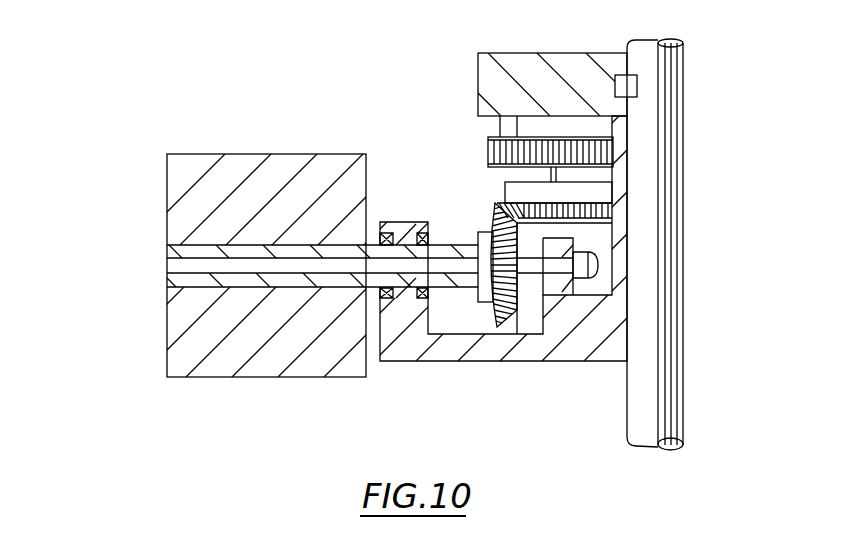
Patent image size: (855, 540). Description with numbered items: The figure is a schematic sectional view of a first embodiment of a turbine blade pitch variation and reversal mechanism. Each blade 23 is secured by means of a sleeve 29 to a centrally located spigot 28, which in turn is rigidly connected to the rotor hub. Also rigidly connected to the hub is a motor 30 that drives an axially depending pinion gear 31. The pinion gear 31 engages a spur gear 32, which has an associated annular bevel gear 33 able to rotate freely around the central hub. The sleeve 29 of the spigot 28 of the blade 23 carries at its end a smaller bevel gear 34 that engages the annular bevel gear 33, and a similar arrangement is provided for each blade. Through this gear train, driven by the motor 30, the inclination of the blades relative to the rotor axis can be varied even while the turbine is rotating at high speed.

The blade 23 is at (202, 370).
The spigot 28 is at (203, 268).
The sleeve 29 is at (180, 256).
The motor 30 is at (517, 52).
The pinion gear 31 is at (488, 155).
The spur gear 32 is at (587, 137).
The annular bevel gear 33 is at (508, 192).
The smaller bevel gear 34 is at (504, 320).